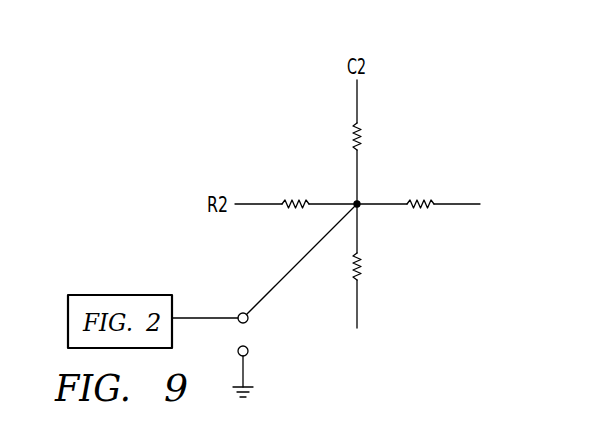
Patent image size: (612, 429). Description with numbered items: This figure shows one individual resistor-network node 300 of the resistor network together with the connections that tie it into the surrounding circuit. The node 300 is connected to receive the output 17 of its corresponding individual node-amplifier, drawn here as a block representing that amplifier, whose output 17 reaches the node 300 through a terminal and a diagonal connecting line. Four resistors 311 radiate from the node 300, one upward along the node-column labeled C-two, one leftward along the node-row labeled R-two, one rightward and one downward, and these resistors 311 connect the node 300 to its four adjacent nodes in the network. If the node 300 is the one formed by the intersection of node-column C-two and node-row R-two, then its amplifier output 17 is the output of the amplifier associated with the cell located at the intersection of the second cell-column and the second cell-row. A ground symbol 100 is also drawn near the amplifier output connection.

The resistor 311 is at (365, 135).
The resistor-network node 300 is at (349, 196).
The amplifier output 17 is at (249, 321).
The ground 100 is at (246, 372).